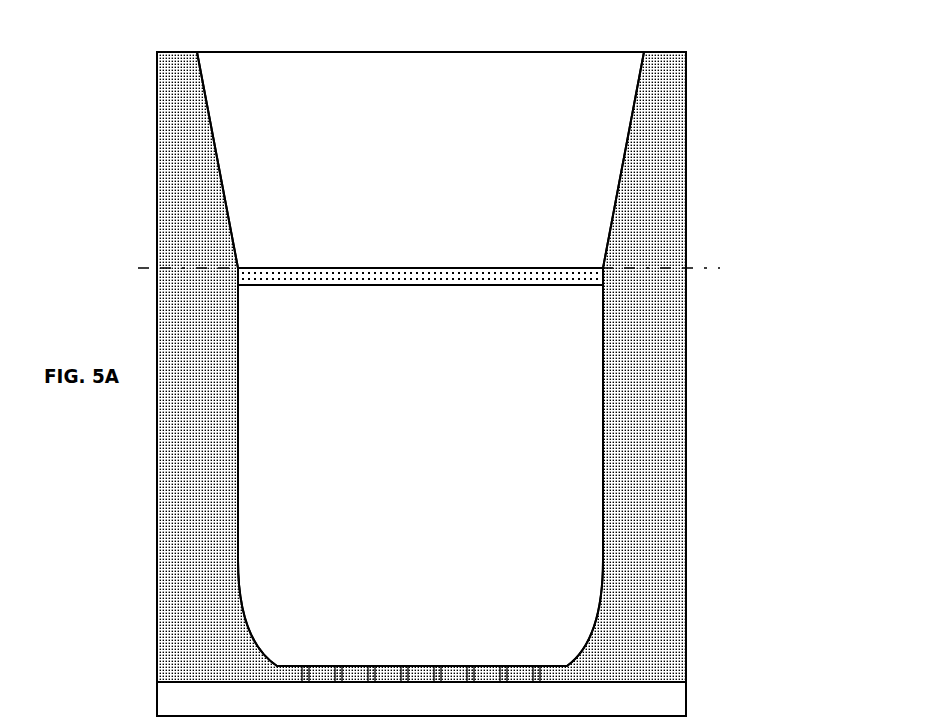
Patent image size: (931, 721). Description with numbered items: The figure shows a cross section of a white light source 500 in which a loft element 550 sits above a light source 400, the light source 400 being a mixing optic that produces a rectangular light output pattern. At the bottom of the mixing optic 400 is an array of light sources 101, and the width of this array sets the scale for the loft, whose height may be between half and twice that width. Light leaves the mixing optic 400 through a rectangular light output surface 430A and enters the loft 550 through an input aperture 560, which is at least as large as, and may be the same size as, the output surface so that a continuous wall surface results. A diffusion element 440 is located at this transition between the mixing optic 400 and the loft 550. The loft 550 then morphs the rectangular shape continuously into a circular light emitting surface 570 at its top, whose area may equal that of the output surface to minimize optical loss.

The array of light sources 101 is at (422, 673).
The light source 400 is at (686, 366).
The rectangular light output surface 430A is at (507, 272).
The diffusion element 440 is at (238, 277).
The white light source 500 is at (740, 418).
The loft element 550 is at (686, 168).
The input aperture 560 is at (505, 268).
The light emitting surface 570 is at (503, 52).